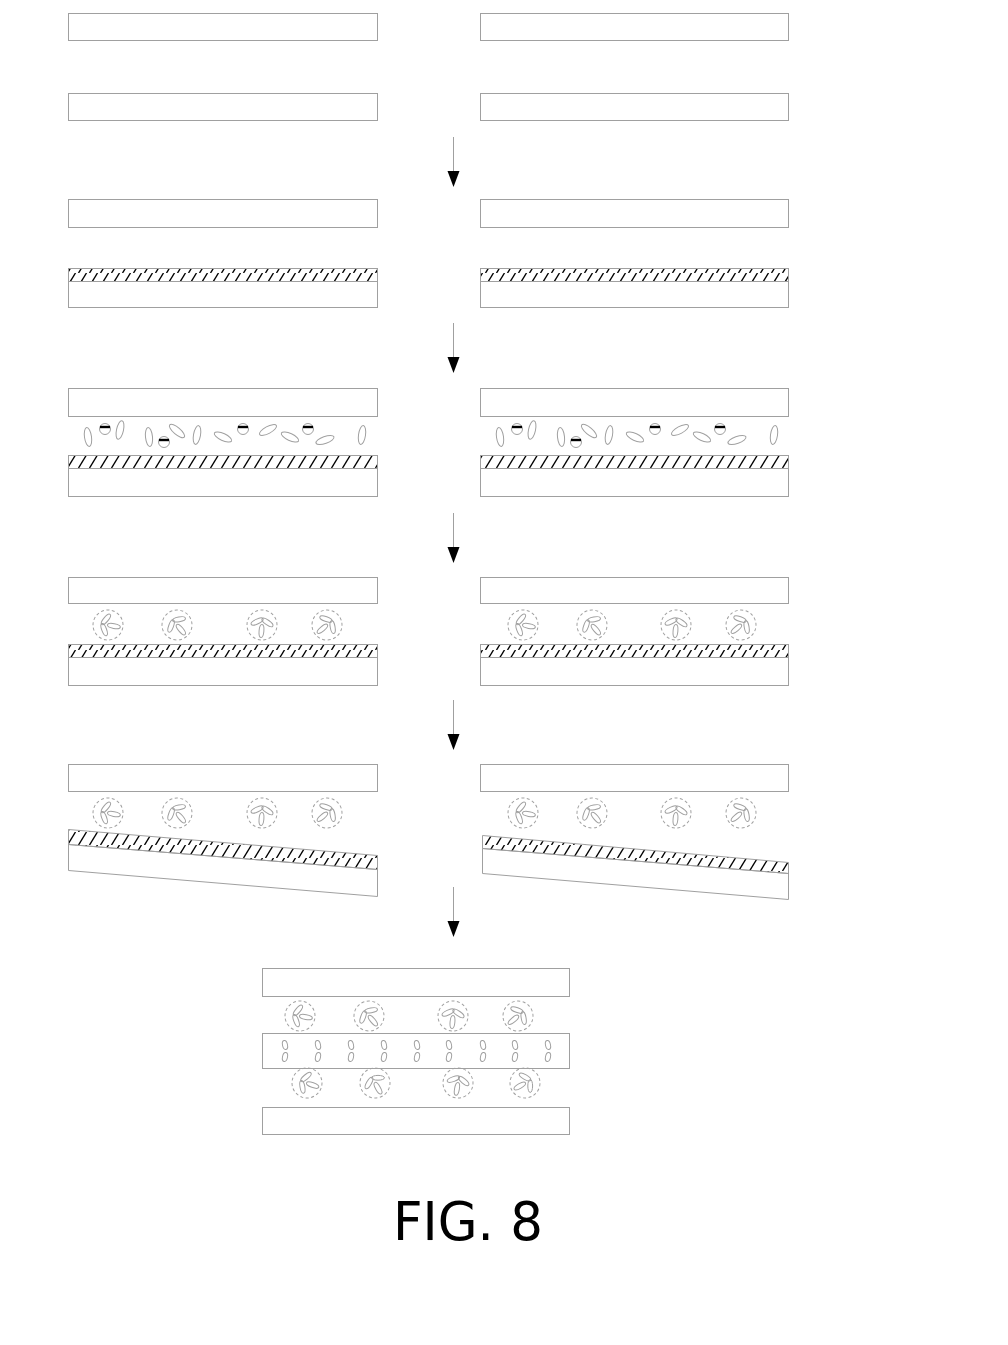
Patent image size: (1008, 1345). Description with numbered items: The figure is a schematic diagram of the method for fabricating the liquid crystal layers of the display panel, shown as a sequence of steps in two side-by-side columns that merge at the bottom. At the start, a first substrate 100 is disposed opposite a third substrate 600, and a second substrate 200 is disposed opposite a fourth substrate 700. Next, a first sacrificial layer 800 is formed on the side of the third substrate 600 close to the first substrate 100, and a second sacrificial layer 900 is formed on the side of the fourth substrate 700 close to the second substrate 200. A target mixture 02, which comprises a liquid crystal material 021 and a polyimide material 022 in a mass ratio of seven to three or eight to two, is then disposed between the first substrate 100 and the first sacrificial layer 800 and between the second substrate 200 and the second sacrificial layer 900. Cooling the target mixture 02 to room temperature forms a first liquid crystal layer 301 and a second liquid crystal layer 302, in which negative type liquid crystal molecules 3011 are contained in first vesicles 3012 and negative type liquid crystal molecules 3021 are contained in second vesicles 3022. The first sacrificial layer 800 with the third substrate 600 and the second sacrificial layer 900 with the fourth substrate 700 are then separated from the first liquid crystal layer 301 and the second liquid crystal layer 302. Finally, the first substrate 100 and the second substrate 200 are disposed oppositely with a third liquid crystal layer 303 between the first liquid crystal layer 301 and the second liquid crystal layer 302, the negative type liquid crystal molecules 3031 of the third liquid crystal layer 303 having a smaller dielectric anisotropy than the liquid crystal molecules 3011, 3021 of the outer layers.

The first substrate 100 is at (363, 24).
The second substrate 200 is at (775, 24).
The third substrate 600 is at (363, 104).
The fourth substrate 700 is at (775, 104).
The first sacrificial layer 800 is at (370, 272).
The second sacrificial layer 900 is at (782, 272).
The target mixture 02 is at (367, 437).
The liquid crystal material 021 is at (178, 424).
The polyimide material 022 is at (248, 423).
The first liquid crystal layer 301 is at (368, 625).
The second liquid crystal layer 302 is at (780, 625).
The liquid crystal molecules 3011 is at (178, 620).
The first vesicles 3012 is at (255, 612).
The liquid crystal molecules 3021 is at (593, 620).
The second vesicles 3022 is at (670, 612).
The third liquid crystal layer 303 is at (570, 1042).
The liquid crystal molecules 3031 is at (552, 1057).